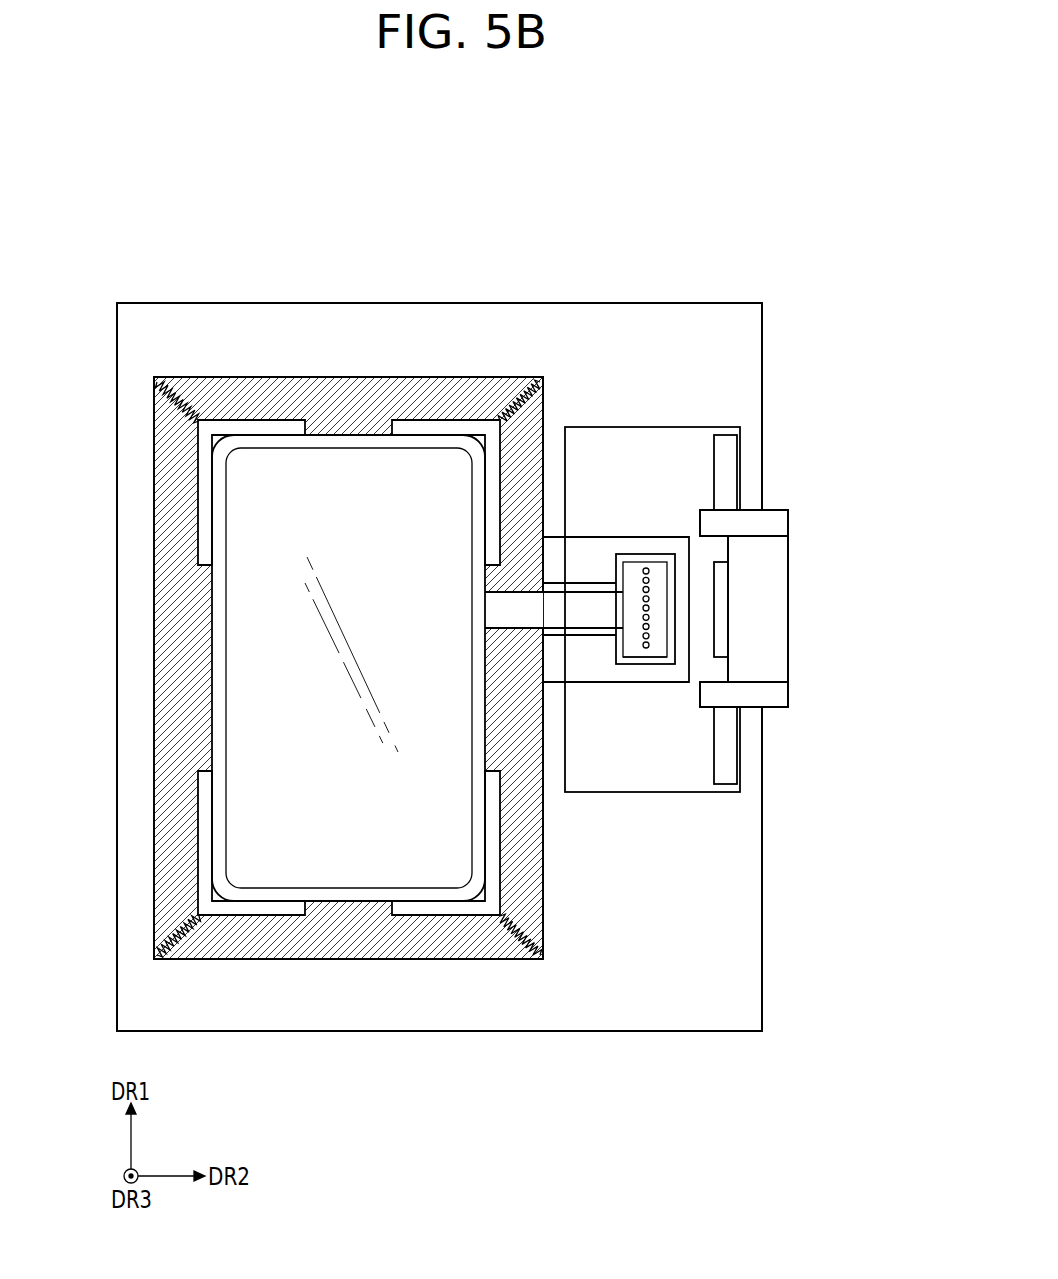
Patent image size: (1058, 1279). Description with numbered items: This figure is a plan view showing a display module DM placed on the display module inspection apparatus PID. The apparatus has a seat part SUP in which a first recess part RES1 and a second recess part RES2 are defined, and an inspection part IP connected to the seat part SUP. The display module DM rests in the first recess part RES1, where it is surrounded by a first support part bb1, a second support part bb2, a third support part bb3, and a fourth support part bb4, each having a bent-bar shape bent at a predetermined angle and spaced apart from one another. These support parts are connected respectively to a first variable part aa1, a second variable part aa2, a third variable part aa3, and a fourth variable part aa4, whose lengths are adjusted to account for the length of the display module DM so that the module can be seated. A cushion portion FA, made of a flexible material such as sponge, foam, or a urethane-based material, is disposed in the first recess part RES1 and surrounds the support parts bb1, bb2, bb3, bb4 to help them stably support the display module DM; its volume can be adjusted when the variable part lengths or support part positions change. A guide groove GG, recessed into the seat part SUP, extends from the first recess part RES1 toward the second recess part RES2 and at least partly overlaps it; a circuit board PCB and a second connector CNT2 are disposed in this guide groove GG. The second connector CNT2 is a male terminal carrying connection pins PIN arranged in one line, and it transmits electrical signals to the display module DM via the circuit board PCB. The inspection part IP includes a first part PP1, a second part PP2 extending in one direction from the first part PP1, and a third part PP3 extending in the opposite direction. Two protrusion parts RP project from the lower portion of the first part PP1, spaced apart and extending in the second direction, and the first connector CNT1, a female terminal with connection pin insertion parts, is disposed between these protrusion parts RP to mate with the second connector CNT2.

The display module inspection apparatus PID is at (752, 253).
The seat part SUP is at (190, 317).
The first recess part RES1 is at (265, 374).
The second recess part RES2 is at (635, 458).
The display module DM is at (345, 440).
The cushion portion FA is at (328, 947).
The first support part bb1 is at (205, 498).
The second support part bb2 is at (205, 823).
The third support part bb3 is at (420, 908).
The fourth support part bb4 is at (425, 427).
The first variable part aa1 is at (168, 418).
The second variable part aa2 is at (175, 920).
The third variable part aa3 is at (487, 955).
The fourth variable part aa4 is at (508, 385).
The circuit board PCB is at (493, 610).
The second connector CNT2 is at (620, 570).
The guide groove GG is at (622, 652).
The connection pins PIN is at (645, 652).
The inspection part IP is at (790, 575).
The protrusion parts RP is at (708, 526).
The first part PP1 is at (773, 607).
The second part PP2 is at (727, 477).
The third part PP3 is at (727, 743).
The first connector CNT1 is at (723, 617).